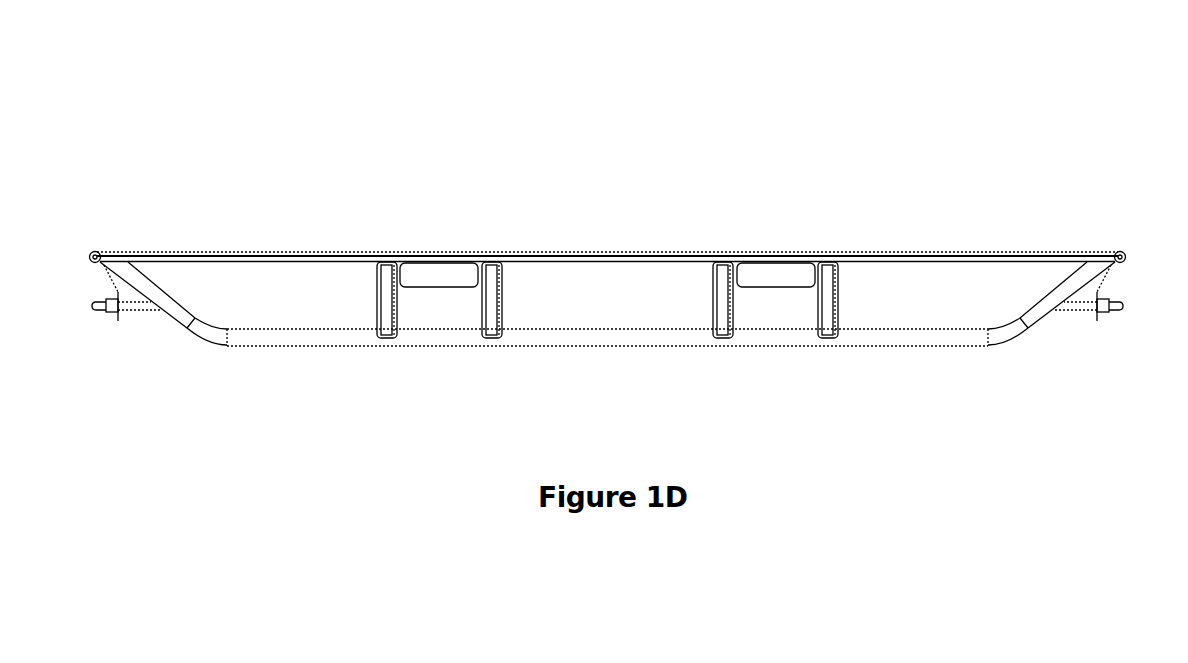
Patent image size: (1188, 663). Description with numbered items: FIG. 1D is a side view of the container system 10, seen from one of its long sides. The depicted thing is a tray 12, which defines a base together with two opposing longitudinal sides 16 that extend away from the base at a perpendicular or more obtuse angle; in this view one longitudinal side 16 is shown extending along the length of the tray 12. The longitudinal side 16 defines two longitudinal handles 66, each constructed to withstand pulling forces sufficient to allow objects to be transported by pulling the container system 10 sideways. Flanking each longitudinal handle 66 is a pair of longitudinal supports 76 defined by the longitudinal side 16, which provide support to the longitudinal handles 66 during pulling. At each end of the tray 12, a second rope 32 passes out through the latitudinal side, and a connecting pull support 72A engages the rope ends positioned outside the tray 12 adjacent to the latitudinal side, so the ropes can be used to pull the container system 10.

The container system 10 is at (209, 71).
The tray 12 is at (160, 250).
The longitudinal sides 16 is at (607, 304).
The second rope 32 is at (129, 306).
The longitudinal handle 66 is at (607, 275).
The connecting pull support 72A is at (113, 316).
The longitudinal supports 76 is at (490, 328).